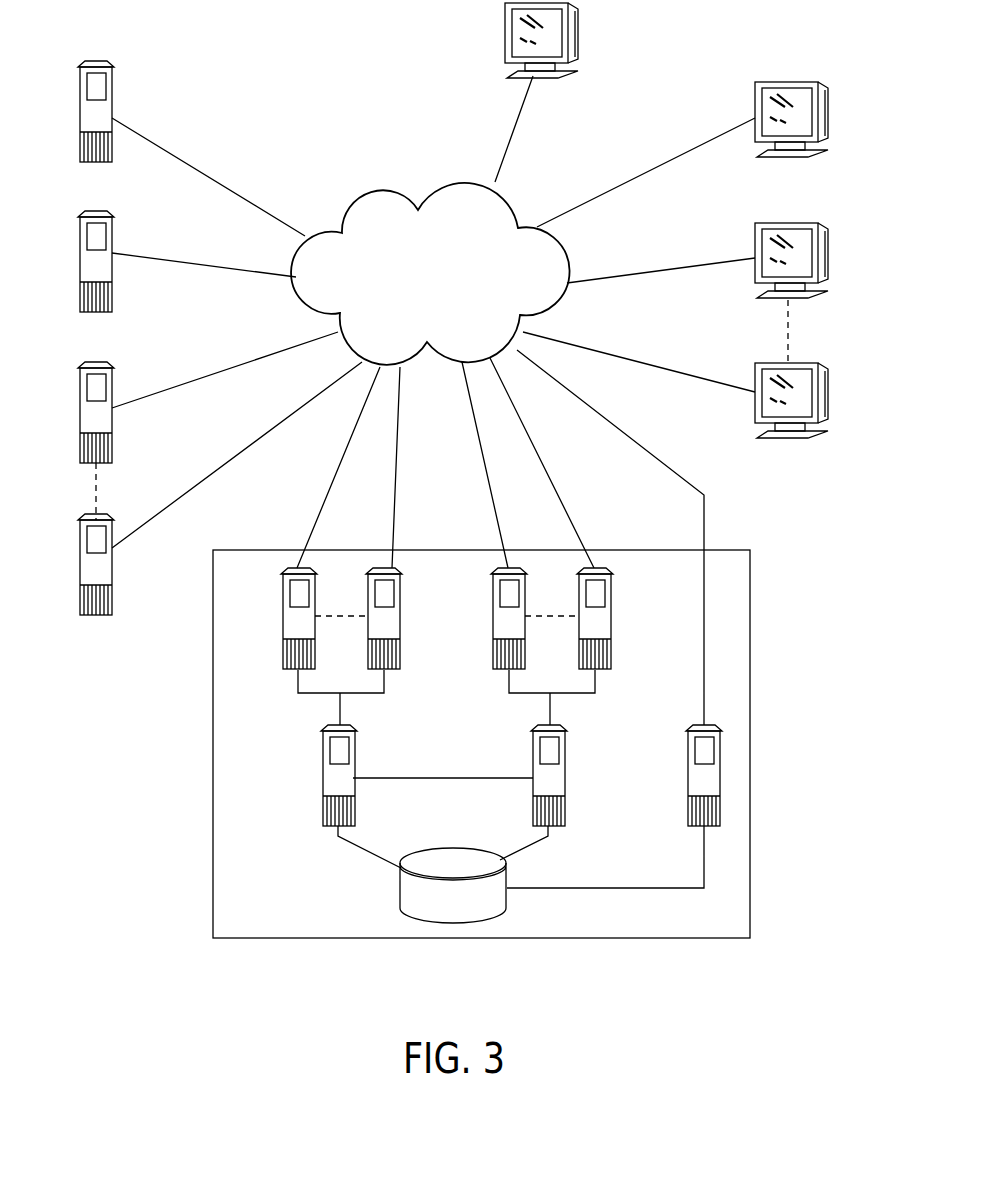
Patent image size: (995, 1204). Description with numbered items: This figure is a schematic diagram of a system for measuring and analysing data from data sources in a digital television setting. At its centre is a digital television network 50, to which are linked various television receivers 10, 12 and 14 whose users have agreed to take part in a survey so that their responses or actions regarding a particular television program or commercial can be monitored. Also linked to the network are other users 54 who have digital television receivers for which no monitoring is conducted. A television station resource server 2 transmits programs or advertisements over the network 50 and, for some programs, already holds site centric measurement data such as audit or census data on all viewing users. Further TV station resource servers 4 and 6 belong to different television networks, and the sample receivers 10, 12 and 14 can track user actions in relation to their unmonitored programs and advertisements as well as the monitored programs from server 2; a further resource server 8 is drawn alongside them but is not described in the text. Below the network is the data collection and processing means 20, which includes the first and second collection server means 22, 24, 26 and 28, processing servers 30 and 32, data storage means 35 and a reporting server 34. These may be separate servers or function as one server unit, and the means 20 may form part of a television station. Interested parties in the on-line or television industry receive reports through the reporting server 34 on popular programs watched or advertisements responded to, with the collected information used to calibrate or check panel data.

The television station resource server 2 is at (80, 92).
The TV station resource server 4 is at (80, 236).
The TV station resource server 6 is at (80, 383).
The client computing device 8 is at (80, 535).
The television receiver 10 is at (830, 110).
The television receiver 12 is at (830, 252).
The television receiver 14 is at (830, 394).
The data collection and processing means 20 is at (212, 757).
The collection server means 22 is at (400, 597).
The collection server means 24 is at (283, 597).
The collection server means 26 is at (493, 635).
The collection server means 28 is at (612, 595).
The processing server 30 is at (323, 758).
The processing server 32 is at (533, 758).
The reporting server 34 is at (688, 783).
The data storage means 35 is at (462, 916).
The digital television network 50 is at (442, 288).
The other users 54 is at (583, 30).